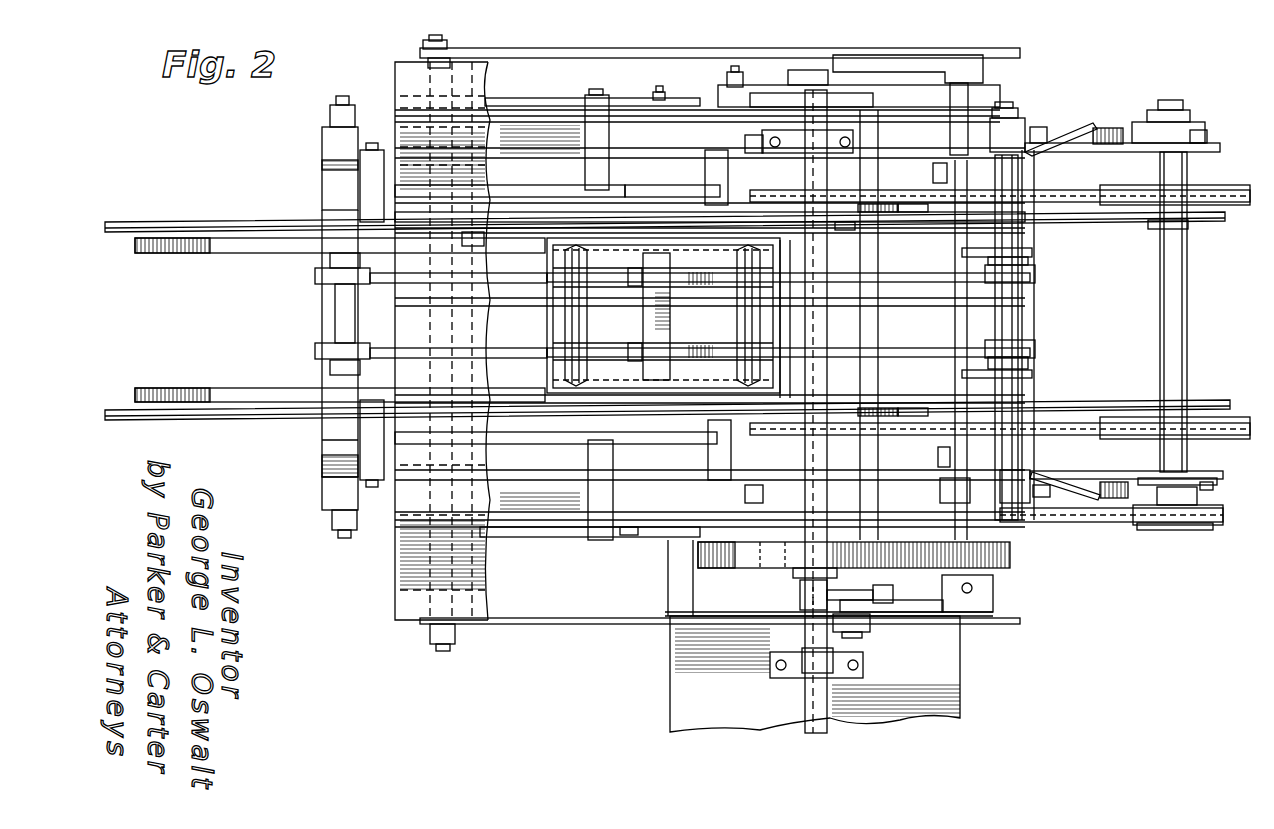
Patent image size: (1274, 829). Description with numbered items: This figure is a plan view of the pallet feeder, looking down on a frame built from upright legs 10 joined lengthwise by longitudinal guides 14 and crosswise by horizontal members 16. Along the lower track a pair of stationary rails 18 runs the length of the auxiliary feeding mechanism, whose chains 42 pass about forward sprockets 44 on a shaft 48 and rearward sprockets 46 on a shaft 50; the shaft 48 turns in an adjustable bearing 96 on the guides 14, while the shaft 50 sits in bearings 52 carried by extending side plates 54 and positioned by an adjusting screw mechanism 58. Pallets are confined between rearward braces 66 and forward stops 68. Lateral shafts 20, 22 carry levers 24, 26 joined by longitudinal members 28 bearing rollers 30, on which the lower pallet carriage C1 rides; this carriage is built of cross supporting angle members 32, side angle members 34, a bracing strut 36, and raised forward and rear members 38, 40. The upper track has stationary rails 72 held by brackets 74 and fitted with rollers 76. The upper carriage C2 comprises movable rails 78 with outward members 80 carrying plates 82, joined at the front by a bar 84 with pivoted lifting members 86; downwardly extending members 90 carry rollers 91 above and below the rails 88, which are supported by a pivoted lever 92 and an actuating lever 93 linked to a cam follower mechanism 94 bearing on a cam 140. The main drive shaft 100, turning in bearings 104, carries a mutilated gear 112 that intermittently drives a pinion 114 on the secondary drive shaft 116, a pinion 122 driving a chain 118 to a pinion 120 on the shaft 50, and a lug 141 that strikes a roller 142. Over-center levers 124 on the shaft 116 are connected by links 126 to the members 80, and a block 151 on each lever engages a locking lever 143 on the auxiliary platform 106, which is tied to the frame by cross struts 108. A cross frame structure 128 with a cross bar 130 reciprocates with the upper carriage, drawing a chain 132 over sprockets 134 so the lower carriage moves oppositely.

The leg 10 is at (326, 142).
The longitudinal guide 14 is at (336, 165).
The horizontal member 16 is at (330, 458).
The stationary rail 18 is at (193, 224).
The shaft 20 is at (1018, 240).
The shaft 22 is at (336, 318).
The lever 24 is at (1030, 262).
The lever 26 is at (330, 262).
The longitudinal member 28 is at (1034, 251).
The roller 30 is at (465, 240).
The cross supporting angle member 32 is at (588, 300).
The side angle member 34 is at (715, 385).
The bracing strut 36 is at (648, 323).
The forward member 38 is at (545, 323).
The rear member 40 is at (782, 318).
The chain 42 is at (1080, 190).
The forward sprocket 44 is at (760, 198).
The rearward sprocket 46 is at (1238, 183).
The shaft 48 is at (822, 238).
The shaft 50 is at (1188, 283).
The bearing 52 is at (1195, 118).
The side plate 54 is at (1220, 146).
The adjusting screw mechanism 58 is at (1108, 128).
The rearward brace 66 is at (1150, 232).
The forward stop 68 is at (933, 176).
The stationary rail 72 is at (905, 212).
The bracket 74 is at (366, 204).
The roller 76 is at (875, 212).
The movable rail 78 is at (646, 197).
The member 80 is at (405, 72).
The plate 82 is at (488, 75).
The bar 84 is at (398, 312).
The lifting member 86 is at (210, 252).
The rail 88 is at (985, 104).
The downwardly extending member 90 is at (605, 97).
The roller 91 is at (665, 105).
The pivoted lever 92 is at (330, 116).
The actuating lever 93 is at (1020, 106).
The cam follower mechanism 94 is at (718, 100).
The adjustable bearing 96 is at (760, 142).
The main drive shaft 100 is at (820, 297).
The bearing 104 is at (855, 142).
The auxiliary platform 106 is at (682, 690).
The cross strut 108 is at (670, 597).
The mutilated gear 112 is at (728, 570).
The pinion 114 is at (1012, 558).
The secondary drive shaft 116 is at (940, 496).
The chain 118 is at (1105, 523).
The pinion 120 is at (1185, 530).
The pinion 122 is at (780, 570).
The over-center lever 124 is at (893, 55).
The link 126 is at (645, 32).
The cross frame structure 128 is at (555, 97).
The cross bar 130 is at (470, 338).
The chain 132 is at (905, 280).
The sprocket 134 is at (318, 286).
The cam 140 is at (858, 87).
The lug 141 is at (770, 70).
The roller 142 is at (735, 72).
The locking lever 143 is at (893, 594).
The block 151 is at (882, 590).
The pallet carriage C1 is at (542, 300).
The upper carriage C2 is at (402, 58).